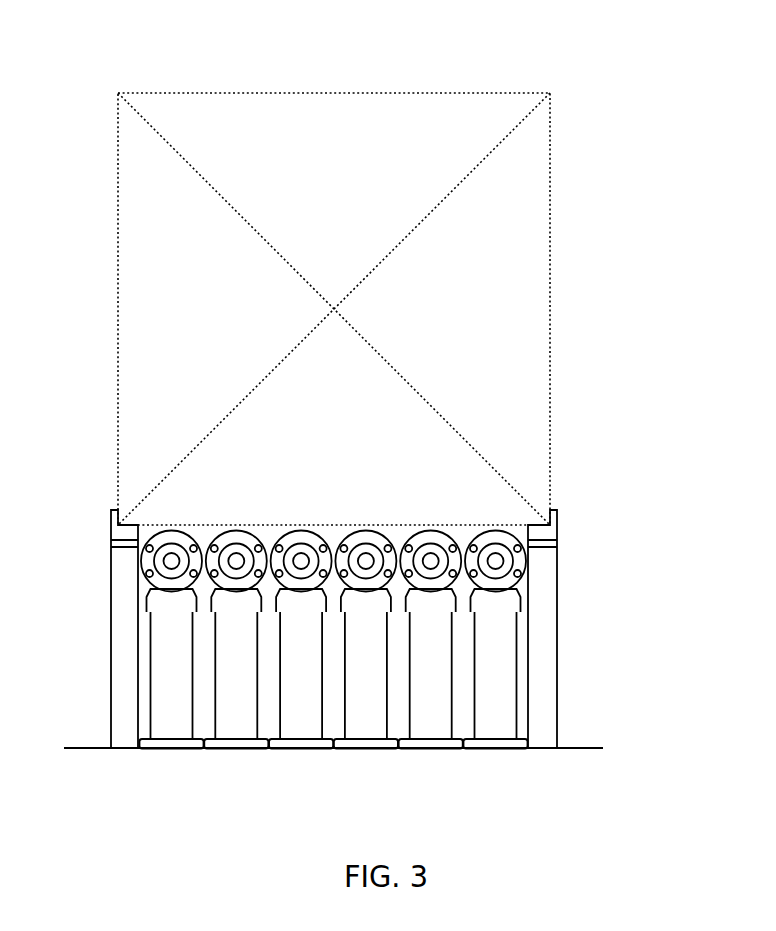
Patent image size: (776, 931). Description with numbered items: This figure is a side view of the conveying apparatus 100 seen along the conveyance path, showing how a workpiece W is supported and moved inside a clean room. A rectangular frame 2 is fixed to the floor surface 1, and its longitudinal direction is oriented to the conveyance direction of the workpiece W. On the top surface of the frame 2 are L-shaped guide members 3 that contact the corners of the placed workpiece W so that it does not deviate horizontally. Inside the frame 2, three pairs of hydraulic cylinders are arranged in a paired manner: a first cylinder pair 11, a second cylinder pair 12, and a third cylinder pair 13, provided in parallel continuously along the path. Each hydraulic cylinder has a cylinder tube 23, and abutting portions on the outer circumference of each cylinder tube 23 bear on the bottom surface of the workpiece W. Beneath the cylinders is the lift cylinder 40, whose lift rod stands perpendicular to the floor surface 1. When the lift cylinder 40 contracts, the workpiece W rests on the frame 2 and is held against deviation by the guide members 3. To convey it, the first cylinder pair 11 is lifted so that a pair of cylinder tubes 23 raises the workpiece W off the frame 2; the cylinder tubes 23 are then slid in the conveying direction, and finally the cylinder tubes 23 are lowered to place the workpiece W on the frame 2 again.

The workpiece W is at (492, 93).
The conveying apparatus 100 is at (680, 478).
The floor surface 1 is at (587, 748).
The frame 2 is at (115, 588).
The guide member 3 is at (117, 533).
The first cylinder pair 11 is at (493, 535).
The second cylinder pair 12 is at (422, 535).
The third cylinder pair 13 is at (225, 535).
The cylinder tube 23 is at (372, 590).
The lift cylinder 40 is at (495, 710).